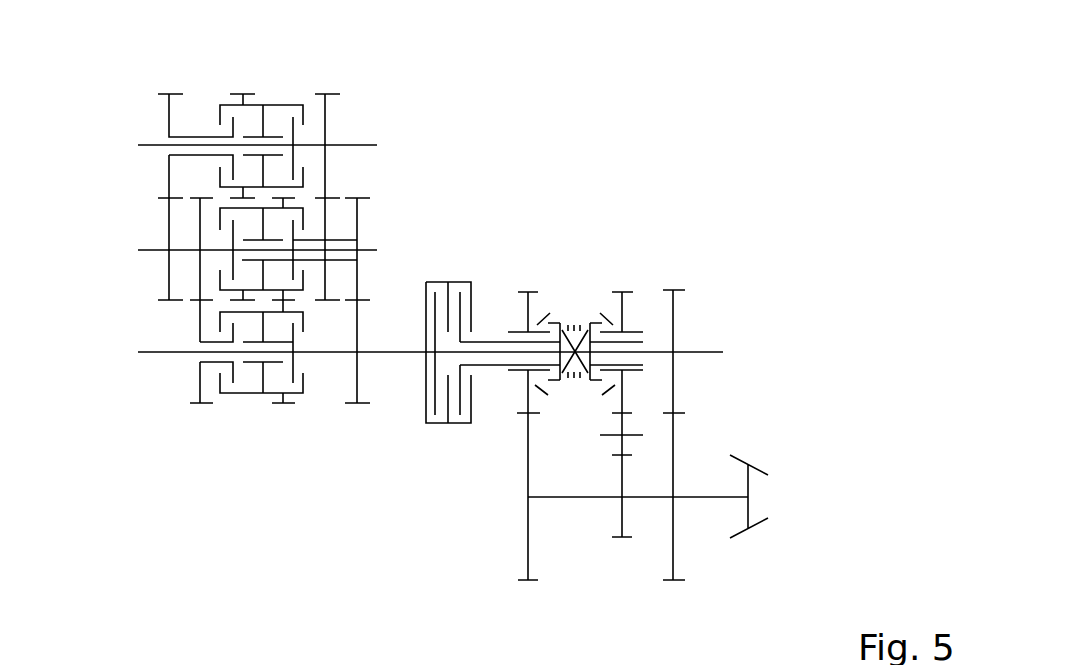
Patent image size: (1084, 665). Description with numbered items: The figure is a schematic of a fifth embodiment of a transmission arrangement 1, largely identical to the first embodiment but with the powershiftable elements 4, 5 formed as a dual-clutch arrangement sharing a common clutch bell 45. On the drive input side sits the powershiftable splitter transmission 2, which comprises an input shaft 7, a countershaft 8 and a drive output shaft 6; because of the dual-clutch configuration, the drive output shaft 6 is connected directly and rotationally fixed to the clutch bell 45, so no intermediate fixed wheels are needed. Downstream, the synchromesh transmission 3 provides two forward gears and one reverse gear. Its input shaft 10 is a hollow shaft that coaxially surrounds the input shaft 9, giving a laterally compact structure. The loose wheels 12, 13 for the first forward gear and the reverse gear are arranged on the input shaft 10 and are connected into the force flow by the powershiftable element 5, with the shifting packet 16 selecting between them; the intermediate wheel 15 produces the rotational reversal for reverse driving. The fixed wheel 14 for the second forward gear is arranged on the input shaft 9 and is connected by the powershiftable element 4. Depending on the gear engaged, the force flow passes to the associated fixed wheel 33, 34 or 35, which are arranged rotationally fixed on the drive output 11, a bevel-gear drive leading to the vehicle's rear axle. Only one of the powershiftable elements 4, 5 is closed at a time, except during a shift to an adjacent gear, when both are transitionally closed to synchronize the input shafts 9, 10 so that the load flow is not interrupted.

The transmission arrangement 1 is at (711, 83).
The splitter transmission 2 is at (259, 379).
The synchromesh transmission 3 is at (669, 333).
The powershiftable element 4 is at (437, 478).
The powershiftable element 5 is at (464, 473).
The drive output shaft 6 is at (282, 508).
The input shaft 7 is at (211, 125).
The countershaft 8 is at (238, 73).
The input shaft 9 is at (644, 327).
The input shaft 10 is at (524, 183).
The drive output 11 is at (735, 560).
The loose wheel 12 is at (504, 185).
The loose wheel 13 is at (580, 190).
The fixed wheel 14 is at (635, 185).
The intermediate wheel 15 is at (703, 426).
The shifting packet 16 is at (563, 198).
The fixed wheel 33 is at (555, 517).
The fixed wheel 34 is at (681, 477).
The fixed wheel 35 is at (624, 517).
The clutch bell 45 is at (416, 333).